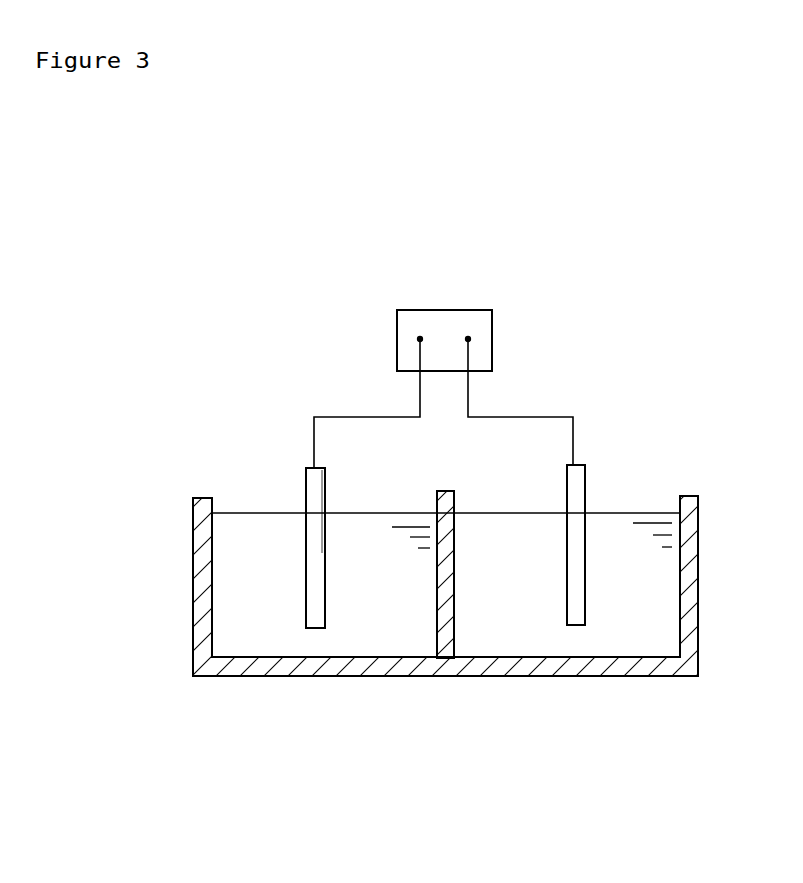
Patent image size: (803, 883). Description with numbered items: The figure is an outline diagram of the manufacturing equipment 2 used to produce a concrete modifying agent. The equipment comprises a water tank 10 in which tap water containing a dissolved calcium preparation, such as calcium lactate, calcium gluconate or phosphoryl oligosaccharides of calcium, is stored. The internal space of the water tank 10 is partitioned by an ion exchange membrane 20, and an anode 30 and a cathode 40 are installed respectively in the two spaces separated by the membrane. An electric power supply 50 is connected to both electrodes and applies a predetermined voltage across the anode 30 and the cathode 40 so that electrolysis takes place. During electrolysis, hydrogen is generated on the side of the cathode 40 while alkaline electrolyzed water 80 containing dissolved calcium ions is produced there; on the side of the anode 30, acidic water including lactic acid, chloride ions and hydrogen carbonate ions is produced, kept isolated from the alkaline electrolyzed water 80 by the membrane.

The manufacturing equipment 2 is at (264, 200).
The water tank 10 is at (355, 678).
The ion exchange membrane 20 is at (448, 653).
The anode 30 is at (578, 483).
The cathode 40 is at (310, 483).
The electric power supply 50 is at (445, 322).
The alkaline electrolyzed water 80 is at (247, 643).